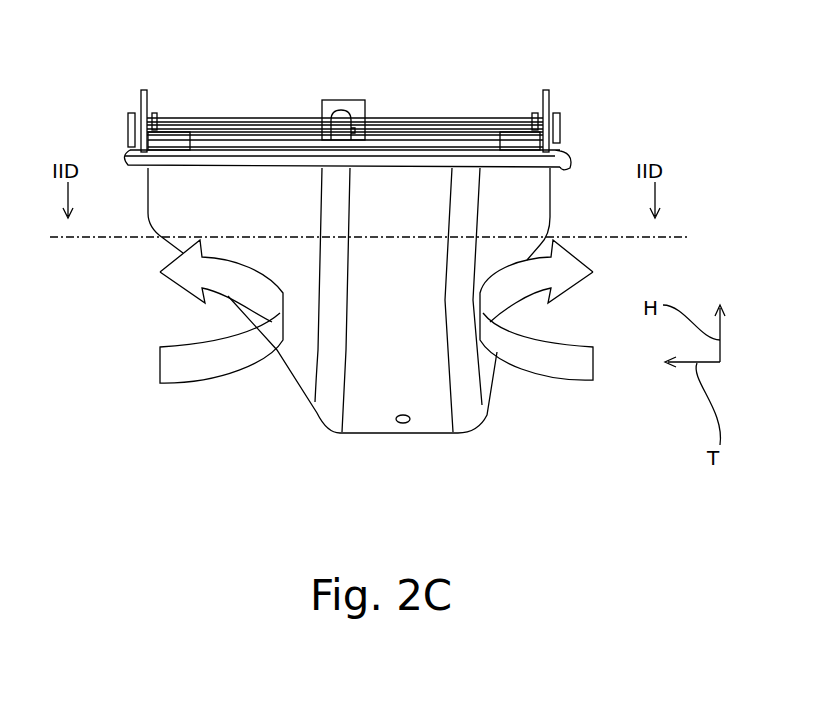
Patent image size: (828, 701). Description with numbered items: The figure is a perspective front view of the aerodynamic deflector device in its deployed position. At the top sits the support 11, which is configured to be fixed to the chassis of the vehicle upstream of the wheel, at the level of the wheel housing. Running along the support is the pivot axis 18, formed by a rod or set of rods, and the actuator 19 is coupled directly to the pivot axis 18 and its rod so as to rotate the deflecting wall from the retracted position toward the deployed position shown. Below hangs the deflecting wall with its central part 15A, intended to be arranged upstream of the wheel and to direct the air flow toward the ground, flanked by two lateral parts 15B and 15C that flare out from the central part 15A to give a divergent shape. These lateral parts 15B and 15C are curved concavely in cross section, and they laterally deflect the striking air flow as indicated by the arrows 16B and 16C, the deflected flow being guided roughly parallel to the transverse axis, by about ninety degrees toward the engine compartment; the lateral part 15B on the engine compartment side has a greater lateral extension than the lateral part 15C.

The support 11 is at (568, 168).
The pivot axis 18 is at (423, 118).
The actuator 19 is at (347, 100).
The central part 15A is at (430, 398).
The lateral part 15B is at (249, 300).
The lateral part 15C is at (540, 184).
The arrow 16B is at (202, 366).
The arrow 16C is at (567, 367).